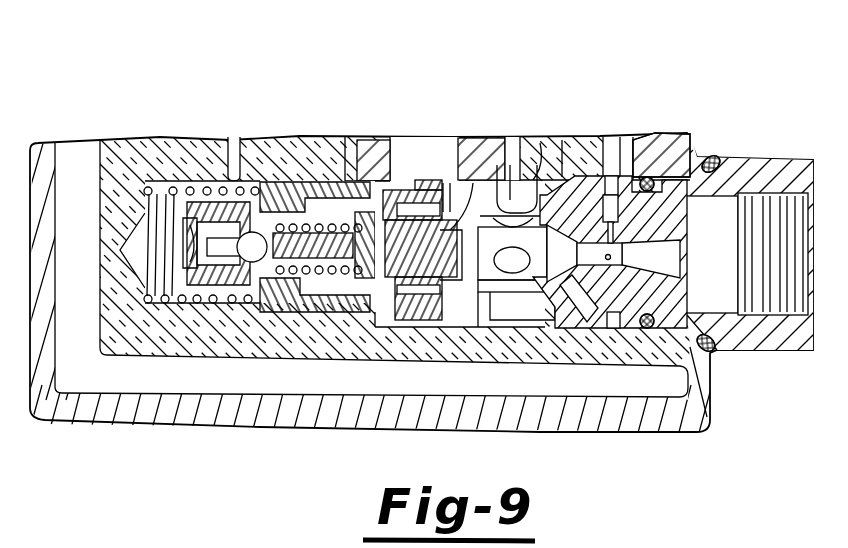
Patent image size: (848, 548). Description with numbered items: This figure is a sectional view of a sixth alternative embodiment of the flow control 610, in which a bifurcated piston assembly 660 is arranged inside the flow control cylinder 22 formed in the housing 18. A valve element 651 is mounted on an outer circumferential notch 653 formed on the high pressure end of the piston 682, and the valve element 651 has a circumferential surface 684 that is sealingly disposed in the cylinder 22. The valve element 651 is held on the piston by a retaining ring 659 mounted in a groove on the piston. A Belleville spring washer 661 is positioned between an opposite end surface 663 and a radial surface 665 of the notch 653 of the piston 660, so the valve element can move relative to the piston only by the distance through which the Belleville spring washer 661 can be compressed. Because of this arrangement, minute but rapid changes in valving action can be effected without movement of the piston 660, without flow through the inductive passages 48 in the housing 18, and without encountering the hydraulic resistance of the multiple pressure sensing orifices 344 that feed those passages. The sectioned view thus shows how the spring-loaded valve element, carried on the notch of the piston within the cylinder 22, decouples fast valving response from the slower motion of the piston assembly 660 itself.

The housing 18 is at (167, 140).
The passageway 48 is at (233, 140).
The flow control 610 is at (465, 126).
The bifurcated piston assembly 660 is at (343, 183).
The Belleville spring washer 661 is at (370, 185).
The valve element 651 is at (430, 180).
The retaining ring 659 is at (458, 215).
The piston 682 is at (478, 215).
The opposite end surface 663 is at (407, 360).
The circumferential surface 684 is at (424, 338).
The pressure sensing orifices 344 is at (612, 178).
The outer circumferential notch 653 is at (377, 283).
The radial surface 665 is at (390, 300).
The flow control cylinder 22 is at (505, 362).